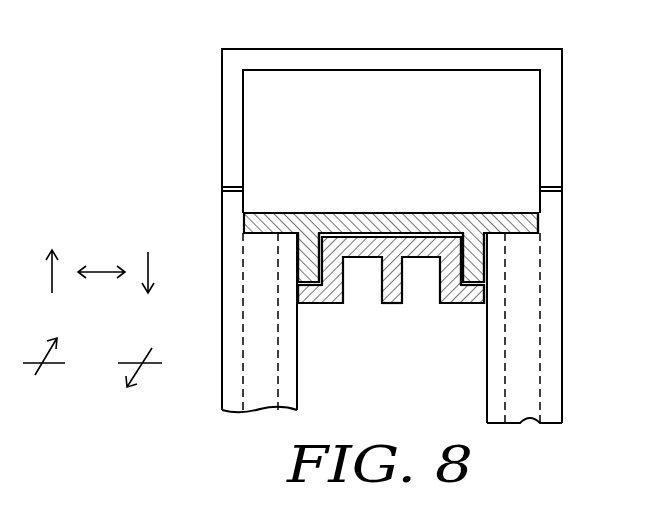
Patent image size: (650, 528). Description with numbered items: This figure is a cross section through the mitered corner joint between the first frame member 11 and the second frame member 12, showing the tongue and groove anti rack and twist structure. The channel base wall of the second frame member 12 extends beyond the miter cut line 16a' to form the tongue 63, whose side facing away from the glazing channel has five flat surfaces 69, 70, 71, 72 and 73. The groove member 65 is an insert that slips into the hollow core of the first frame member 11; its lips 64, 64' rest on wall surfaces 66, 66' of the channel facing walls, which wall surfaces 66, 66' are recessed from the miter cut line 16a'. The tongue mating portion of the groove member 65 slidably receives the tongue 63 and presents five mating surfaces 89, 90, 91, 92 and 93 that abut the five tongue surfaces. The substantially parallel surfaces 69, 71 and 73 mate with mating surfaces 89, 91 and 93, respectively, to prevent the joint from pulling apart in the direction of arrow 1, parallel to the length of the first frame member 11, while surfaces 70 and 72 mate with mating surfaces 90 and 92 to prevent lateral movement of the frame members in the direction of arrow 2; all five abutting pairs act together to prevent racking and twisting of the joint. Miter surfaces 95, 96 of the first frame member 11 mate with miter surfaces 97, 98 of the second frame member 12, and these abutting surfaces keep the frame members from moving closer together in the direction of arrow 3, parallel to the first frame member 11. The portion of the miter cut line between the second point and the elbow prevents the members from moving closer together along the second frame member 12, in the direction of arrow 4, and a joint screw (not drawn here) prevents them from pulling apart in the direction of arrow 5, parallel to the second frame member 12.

The first frame member 11 is at (562, 332).
The second frame member 12 is at (407, 49).
The miter cut line 16a' is at (172, 190).
The tongue 63 is at (395, 315).
The lip 64 is at (391, 230).
The lip 64' is at (479, 194).
The groove member 65 is at (396, 149).
The wall surface 66 is at (259, 322).
The wall surface 66' is at (553, 328).
The surface 69 is at (298, 296).
The surface 70 is at (337, 238).
The surface 71 is at (393, 238).
The surface 72 is at (453, 240).
The surface 73 is at (478, 295).
The mating surface 89 is at (301, 284).
The mating surface 90 is at (314, 238).
The mating surface 91 is at (381, 214).
The mating surface 92 is at (472, 242).
The mating surface 93 is at (476, 268).
The miter surface 95 is at (552, 193).
The miter surface 96 is at (232, 192).
The miter surface 97 is at (552, 186).
The miter surface 98 is at (232, 186).
The arrow 1 is at (52, 283).
The arrow 2 is at (101, 283).
The arrow 3 is at (148, 284).
The arrow 4 is at (44, 368).
The arrow 5 is at (140, 373).